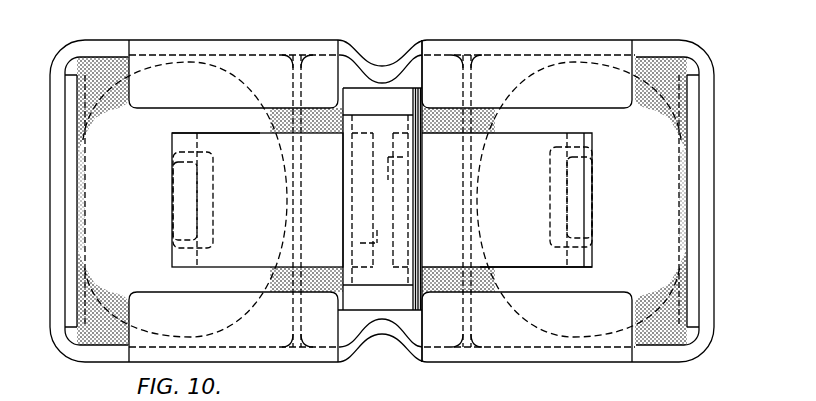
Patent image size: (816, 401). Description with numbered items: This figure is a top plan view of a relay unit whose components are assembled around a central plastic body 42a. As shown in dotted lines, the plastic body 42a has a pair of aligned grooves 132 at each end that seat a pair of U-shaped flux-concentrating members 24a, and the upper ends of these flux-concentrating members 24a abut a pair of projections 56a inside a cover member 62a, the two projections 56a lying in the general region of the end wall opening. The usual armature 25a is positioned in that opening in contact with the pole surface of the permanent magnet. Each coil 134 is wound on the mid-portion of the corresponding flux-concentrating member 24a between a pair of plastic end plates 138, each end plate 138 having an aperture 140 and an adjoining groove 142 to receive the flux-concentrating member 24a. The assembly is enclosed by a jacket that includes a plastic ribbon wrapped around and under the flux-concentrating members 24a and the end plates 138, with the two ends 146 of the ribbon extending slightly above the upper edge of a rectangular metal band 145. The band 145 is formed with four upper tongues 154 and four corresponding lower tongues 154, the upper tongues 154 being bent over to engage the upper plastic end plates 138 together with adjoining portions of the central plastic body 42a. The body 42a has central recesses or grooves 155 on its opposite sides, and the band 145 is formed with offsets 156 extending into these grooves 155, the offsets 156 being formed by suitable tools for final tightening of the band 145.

The U-shaped flux-concentrating member 24a is at (307, 170).
The armature 25a is at (362, 246).
The central plastic body 42a is at (467, 343).
The projection 56a is at (415, 160).
The cover member 62a is at (382, 268).
The aligned groove 132 is at (317, 132).
The coil 134 is at (97, 290).
The end plate 138 is at (700, 59).
The aperture 140 is at (172, 146).
The groove 142 is at (219, 134).
The rectangular metal band 145 is at (683, 41).
The ribbon end 146 is at (88, 200).
The tongue 154 is at (147, 103).
The central recess or groove 155 is at (424, 66).
The offset 156 is at (370, 64).